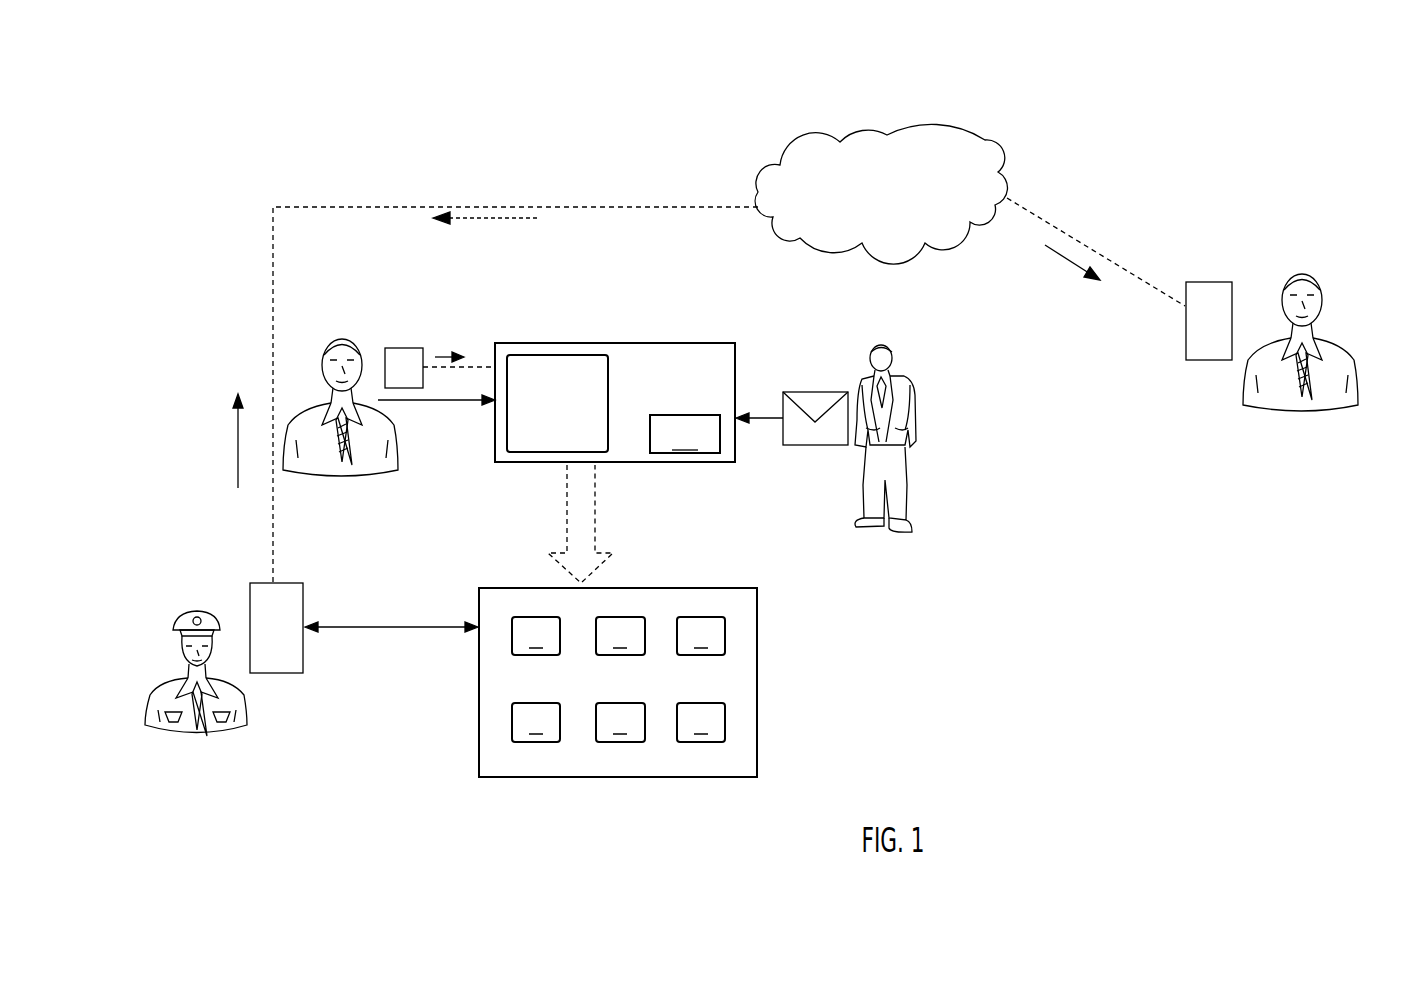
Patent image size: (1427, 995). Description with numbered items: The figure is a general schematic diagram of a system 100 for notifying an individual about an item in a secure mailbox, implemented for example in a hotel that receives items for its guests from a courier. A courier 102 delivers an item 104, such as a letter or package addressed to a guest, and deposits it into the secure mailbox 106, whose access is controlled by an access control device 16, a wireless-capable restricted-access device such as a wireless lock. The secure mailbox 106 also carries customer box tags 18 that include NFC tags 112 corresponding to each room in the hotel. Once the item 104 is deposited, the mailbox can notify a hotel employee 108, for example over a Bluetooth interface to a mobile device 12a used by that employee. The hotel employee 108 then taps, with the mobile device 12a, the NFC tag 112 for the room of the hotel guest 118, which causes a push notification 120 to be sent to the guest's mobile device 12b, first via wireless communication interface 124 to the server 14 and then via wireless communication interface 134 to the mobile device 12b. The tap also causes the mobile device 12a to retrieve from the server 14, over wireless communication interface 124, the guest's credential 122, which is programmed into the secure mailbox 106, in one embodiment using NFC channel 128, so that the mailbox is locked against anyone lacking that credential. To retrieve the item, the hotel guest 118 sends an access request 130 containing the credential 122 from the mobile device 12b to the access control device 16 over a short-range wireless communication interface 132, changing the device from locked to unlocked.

The system 100 is at (926, 85).
The server 14 is at (997, 156).
The wireless communication interface 124 is at (632, 207).
The credential 122 is at (487, 219).
The wireless communication interface 134 is at (1036, 213).
The push notification 120 is at (1068, 262).
The mobile device 12b is at (406, 348).
The access request 130 is at (443, 352).
The short-range wireless communication interface 132 is at (478, 365).
The secure mailbox 106 is at (681, 343).
The access control device 16 is at (608, 370).
The customer box tags 18 is at (757, 685).
The NFC tags 112 is at (528, 617).
The item 104 is at (800, 392).
The courier 102 is at (918, 400).
The hotel guest 118 is at (330, 474).
The NFC channel 128 is at (380, 626).
The mobile device 12a is at (296, 673).
The hotel employee 108 is at (160, 689).